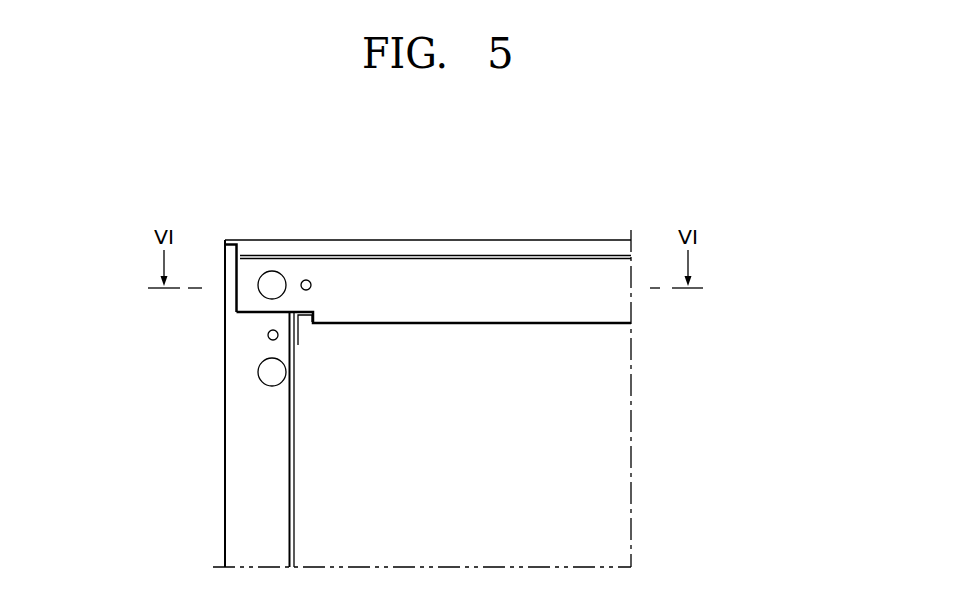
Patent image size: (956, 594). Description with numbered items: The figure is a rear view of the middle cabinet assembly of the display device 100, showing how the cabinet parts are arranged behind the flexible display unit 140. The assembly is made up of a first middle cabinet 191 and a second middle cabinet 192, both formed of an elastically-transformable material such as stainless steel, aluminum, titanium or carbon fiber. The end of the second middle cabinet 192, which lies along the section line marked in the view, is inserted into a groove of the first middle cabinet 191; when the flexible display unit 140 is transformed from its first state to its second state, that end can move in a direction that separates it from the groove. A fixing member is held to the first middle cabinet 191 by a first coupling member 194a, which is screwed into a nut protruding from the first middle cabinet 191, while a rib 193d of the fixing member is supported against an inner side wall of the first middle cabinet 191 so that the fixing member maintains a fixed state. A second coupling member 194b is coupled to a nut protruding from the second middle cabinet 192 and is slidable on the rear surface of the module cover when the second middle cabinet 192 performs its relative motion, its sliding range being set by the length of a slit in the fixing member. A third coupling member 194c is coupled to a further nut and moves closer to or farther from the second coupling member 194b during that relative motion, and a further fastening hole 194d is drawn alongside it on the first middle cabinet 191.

The display device 100 is at (593, 177).
The flexible display unit 140 is at (623, 461).
The first middle cabinet 191 is at (232, 460).
The second middle cabinet 192 is at (488, 272).
The rib 193d is at (300, 343).
The first coupling member 194a is at (268, 335).
The second coupling member 194b is at (308, 279).
The third coupling member 194c is at (272, 271).
The fastening hole 194d is at (258, 372).